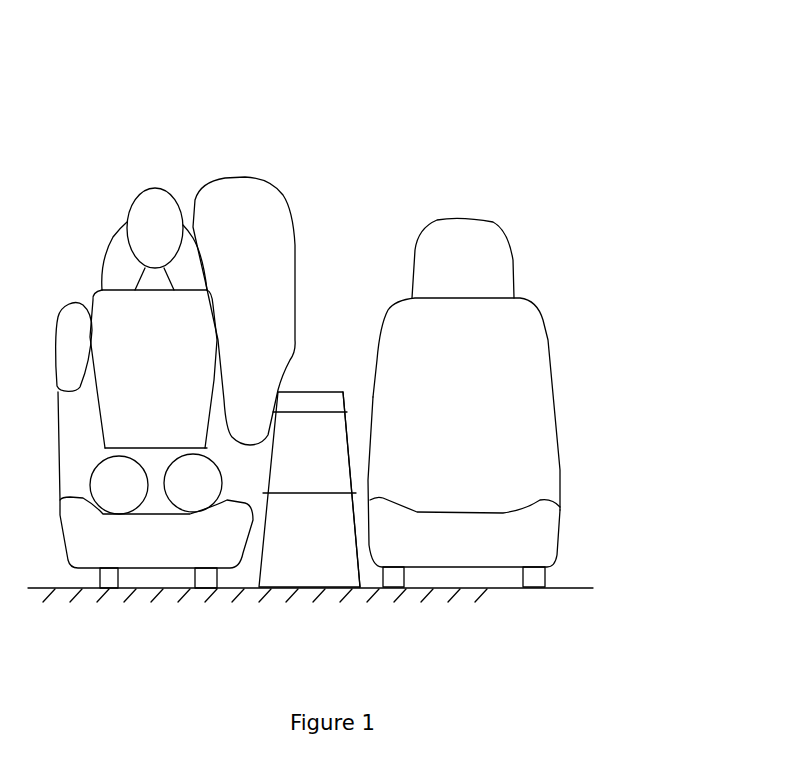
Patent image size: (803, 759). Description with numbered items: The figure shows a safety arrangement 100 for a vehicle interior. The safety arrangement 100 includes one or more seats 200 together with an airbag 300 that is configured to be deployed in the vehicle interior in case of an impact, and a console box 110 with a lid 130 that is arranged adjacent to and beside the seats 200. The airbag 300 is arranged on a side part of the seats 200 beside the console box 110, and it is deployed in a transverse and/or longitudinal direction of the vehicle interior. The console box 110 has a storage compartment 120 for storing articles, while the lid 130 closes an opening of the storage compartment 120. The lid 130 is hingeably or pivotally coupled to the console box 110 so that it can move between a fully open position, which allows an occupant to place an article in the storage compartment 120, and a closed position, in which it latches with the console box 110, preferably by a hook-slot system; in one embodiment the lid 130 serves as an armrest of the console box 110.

The safety arrangement 100 is at (528, 146).
The console box 110 is at (368, 481).
The storage compartment 120 is at (350, 443).
The lid 130 is at (357, 448).
The seats 200 is at (510, 431).
The airbag 300 is at (296, 262).